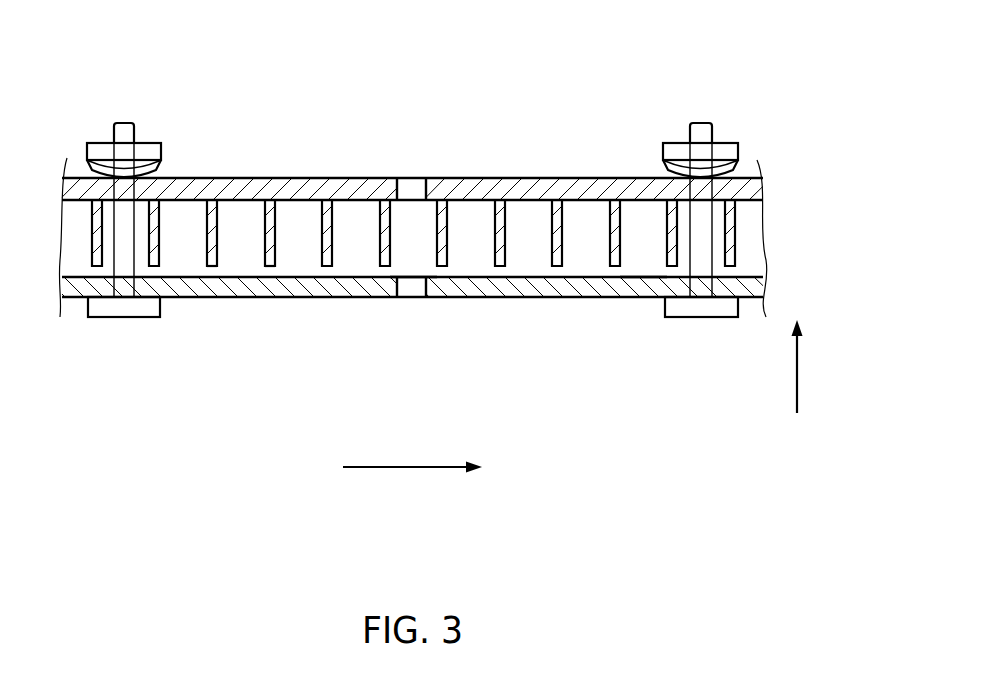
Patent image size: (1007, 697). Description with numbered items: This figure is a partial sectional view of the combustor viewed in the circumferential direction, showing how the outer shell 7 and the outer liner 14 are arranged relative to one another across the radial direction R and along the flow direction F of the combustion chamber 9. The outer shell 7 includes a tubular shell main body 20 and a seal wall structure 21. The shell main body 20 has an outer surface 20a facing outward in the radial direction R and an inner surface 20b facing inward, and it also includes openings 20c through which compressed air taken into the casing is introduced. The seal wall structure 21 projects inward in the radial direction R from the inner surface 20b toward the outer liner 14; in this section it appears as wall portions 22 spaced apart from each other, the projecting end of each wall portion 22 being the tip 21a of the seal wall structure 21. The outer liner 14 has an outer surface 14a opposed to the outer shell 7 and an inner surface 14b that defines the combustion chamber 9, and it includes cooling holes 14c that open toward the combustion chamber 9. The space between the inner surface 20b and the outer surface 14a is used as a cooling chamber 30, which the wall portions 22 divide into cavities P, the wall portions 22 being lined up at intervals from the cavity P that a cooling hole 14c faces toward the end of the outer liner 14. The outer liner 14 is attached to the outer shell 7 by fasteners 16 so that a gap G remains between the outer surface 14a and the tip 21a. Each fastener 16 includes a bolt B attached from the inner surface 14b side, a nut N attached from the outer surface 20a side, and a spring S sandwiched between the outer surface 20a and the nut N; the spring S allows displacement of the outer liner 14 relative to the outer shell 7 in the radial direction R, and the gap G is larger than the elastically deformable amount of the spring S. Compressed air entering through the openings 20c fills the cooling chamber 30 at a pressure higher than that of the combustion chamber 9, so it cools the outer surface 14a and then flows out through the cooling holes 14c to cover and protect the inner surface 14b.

The outer shell 7 is at (173, 70).
The combustion chamber 9 is at (340, 367).
The outer liner 14 is at (192, 297).
The outer surface 14a is at (478, 275).
The inner surface 14b is at (569, 297).
The cooling holes 14c is at (415, 288).
The fastener 16 is at (730, 142).
The shell main body 20 is at (183, 178).
The outer surface 20a is at (527, 177).
The inner surface 20b is at (588, 208).
The openings 20c is at (412, 186).
The seal wall structure 21 is at (265, 228).
The tip 21a is at (268, 268).
The wall portions 22 is at (322, 228).
The cooling chamber 30 is at (643, 253).
The bolt B is at (113, 318).
The flow direction F is at (407, 470).
The gap G is at (214, 268).
The nut N is at (100, 143).
The cavities P is at (403, 242).
The radial direction R is at (799, 366).
The spring S is at (85, 167).